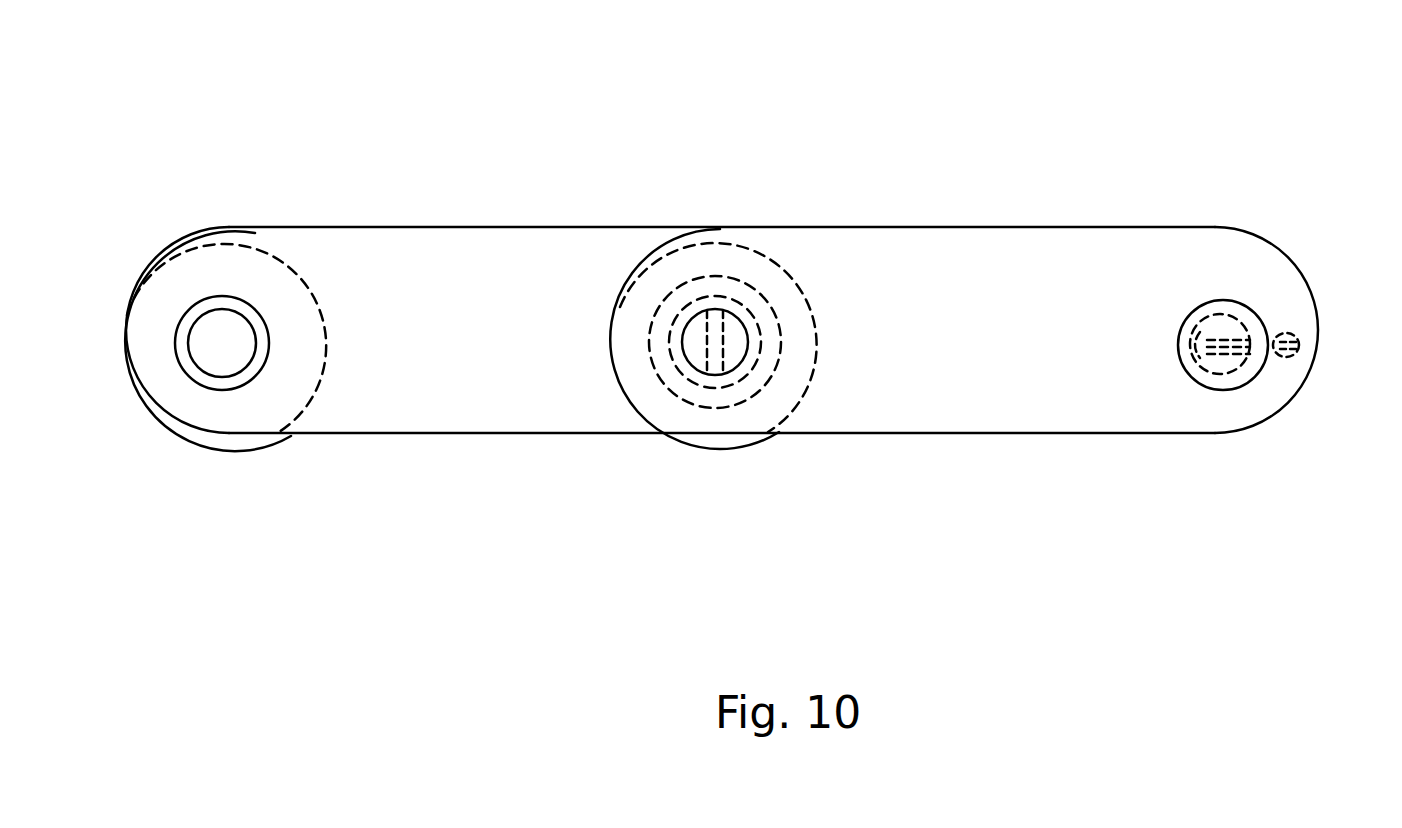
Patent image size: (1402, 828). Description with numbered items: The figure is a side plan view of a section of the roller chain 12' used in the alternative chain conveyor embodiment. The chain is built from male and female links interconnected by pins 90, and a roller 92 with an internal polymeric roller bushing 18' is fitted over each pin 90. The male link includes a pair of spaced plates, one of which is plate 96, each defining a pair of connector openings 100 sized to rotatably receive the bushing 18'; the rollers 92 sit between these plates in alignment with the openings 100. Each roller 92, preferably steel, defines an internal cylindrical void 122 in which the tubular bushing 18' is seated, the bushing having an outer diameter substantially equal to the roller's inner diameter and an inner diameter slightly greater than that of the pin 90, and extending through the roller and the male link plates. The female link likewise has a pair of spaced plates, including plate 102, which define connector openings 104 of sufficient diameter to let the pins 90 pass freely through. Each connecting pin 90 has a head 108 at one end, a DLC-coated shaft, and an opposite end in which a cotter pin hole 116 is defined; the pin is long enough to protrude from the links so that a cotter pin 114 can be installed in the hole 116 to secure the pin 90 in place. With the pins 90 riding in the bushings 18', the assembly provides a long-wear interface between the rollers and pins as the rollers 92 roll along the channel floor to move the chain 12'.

The roller chain 12' is at (973, 120).
The roller bushing 18' is at (478, 335).
The pin 90 is at (733, 347).
The roller 92 is at (252, 447).
The plate 96 is at (722, 323).
The connector opening 100 is at (236, 389).
The plate 102 is at (1063, 250).
The connector opening 104 is at (1253, 357).
The head 108 is at (767, 307).
The cotter pin 114 is at (1273, 340).
The cotter pin hole 116 is at (710, 338).
The internal cylindrical void 122 is at (717, 298).